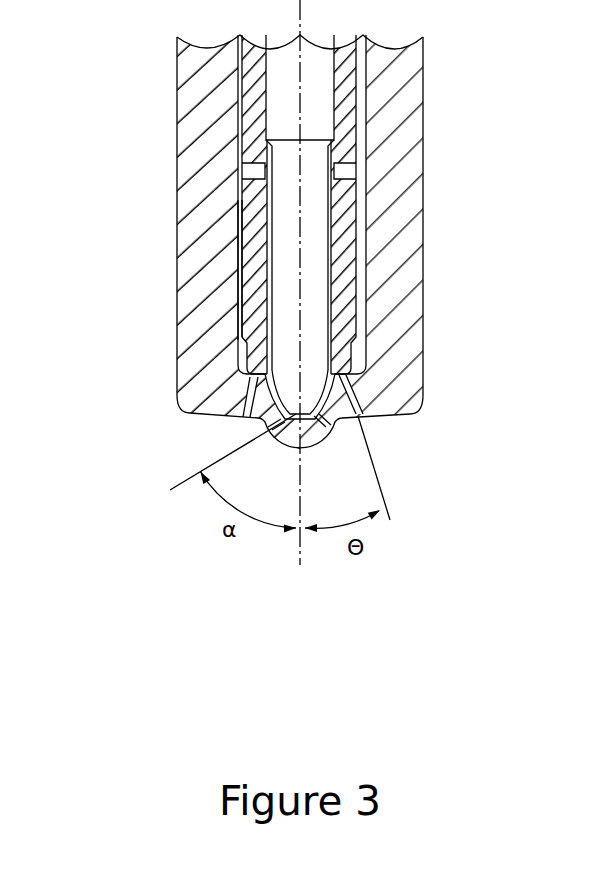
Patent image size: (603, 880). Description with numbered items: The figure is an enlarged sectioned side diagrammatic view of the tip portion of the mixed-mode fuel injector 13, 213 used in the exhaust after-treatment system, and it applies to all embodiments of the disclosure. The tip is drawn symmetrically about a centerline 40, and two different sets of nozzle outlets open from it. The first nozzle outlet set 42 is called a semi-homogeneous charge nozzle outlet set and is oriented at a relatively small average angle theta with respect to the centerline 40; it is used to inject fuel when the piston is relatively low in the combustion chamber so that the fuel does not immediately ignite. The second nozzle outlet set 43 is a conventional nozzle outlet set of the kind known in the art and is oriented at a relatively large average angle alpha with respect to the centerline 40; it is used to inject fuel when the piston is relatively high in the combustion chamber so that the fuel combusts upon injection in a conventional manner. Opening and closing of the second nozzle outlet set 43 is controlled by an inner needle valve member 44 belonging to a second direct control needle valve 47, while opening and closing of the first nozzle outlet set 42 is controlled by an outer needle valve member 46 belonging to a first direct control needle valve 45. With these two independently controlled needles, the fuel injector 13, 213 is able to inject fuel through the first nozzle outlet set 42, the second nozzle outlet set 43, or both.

The mixed-mode fuel injector 13 is at (426, 222).
The mixed-mode fuel injector 213 is at (378, 245).
The centerline 40 is at (297, 547).
The first nozzle outlet set 42 is at (247, 384).
The second nozzle outlet set 43 is at (340, 430).
The inner needle valve member 44 is at (330, 242).
The first direct control needle valve 45 is at (227, 316).
The outer needle valve member 46 is at (235, 331).
The second direct control needle valve 47 is at (256, 246).